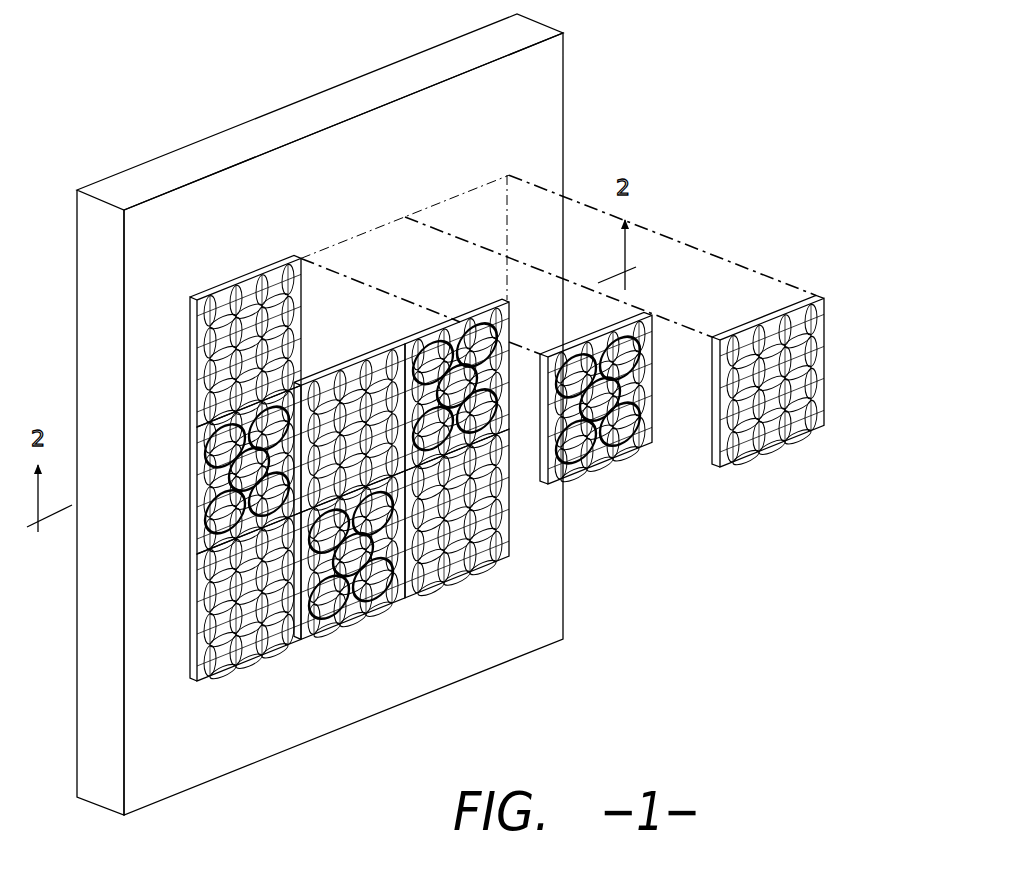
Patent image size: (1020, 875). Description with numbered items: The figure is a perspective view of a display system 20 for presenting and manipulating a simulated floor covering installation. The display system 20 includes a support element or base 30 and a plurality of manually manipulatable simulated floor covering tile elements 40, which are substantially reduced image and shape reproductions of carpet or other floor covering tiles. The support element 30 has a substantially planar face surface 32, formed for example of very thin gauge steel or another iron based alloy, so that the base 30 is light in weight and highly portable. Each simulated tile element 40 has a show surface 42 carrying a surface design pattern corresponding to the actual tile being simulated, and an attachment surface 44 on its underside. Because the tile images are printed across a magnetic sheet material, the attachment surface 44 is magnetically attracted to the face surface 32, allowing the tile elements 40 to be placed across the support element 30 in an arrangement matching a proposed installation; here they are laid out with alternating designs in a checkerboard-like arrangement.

The display system 20 is at (432, 411).
The support element 30 is at (320, 414).
The face surface 32 is at (492, 131).
The simulated floor covering tile element 40 is at (246, 274).
The show surface 42 is at (202, 355).
The attachment surface 44 is at (783, 310).